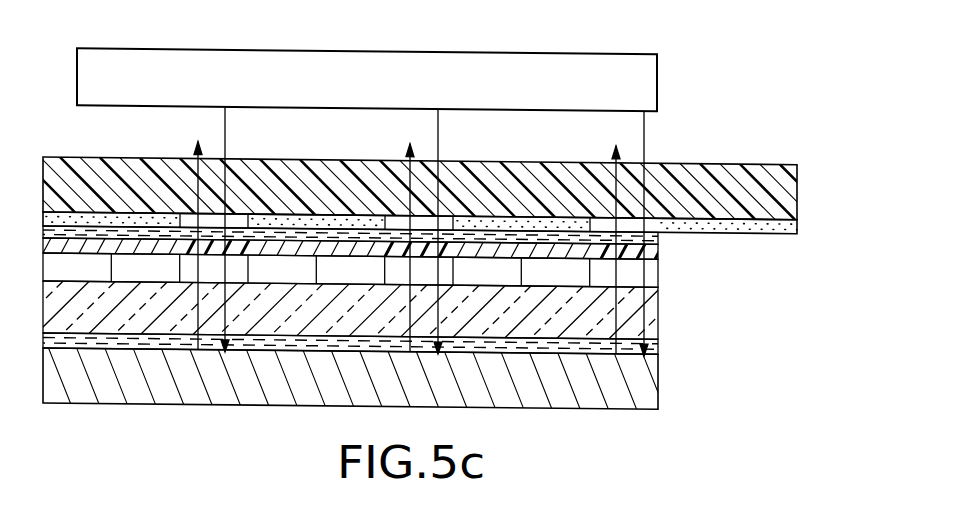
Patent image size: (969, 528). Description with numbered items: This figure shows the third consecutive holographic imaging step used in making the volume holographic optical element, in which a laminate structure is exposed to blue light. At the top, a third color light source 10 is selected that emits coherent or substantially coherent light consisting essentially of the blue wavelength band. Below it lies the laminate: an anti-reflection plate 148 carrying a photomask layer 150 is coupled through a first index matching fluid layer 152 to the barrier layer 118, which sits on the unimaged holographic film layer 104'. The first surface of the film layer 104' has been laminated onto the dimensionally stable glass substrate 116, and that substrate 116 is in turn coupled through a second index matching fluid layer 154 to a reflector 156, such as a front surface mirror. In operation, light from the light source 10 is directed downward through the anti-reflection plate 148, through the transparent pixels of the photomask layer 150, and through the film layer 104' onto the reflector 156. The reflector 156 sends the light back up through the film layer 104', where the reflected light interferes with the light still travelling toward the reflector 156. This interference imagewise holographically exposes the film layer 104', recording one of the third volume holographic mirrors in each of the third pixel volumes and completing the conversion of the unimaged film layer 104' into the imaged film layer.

The third color light source 10 is at (657, 74).
The anti-reflection plate 148 is at (800, 192).
The photomask layer 150 is at (797, 222).
The first index matching fluid layer 152 is at (658, 233).
The barrier layer 118 is at (658, 251).
The holographic film layer 104' is at (430, 286).
The dimensionally stable substrate 116 is at (658, 309).
The second index matching fluid layer 154 is at (658, 342).
The reflector 156 is at (658, 376).